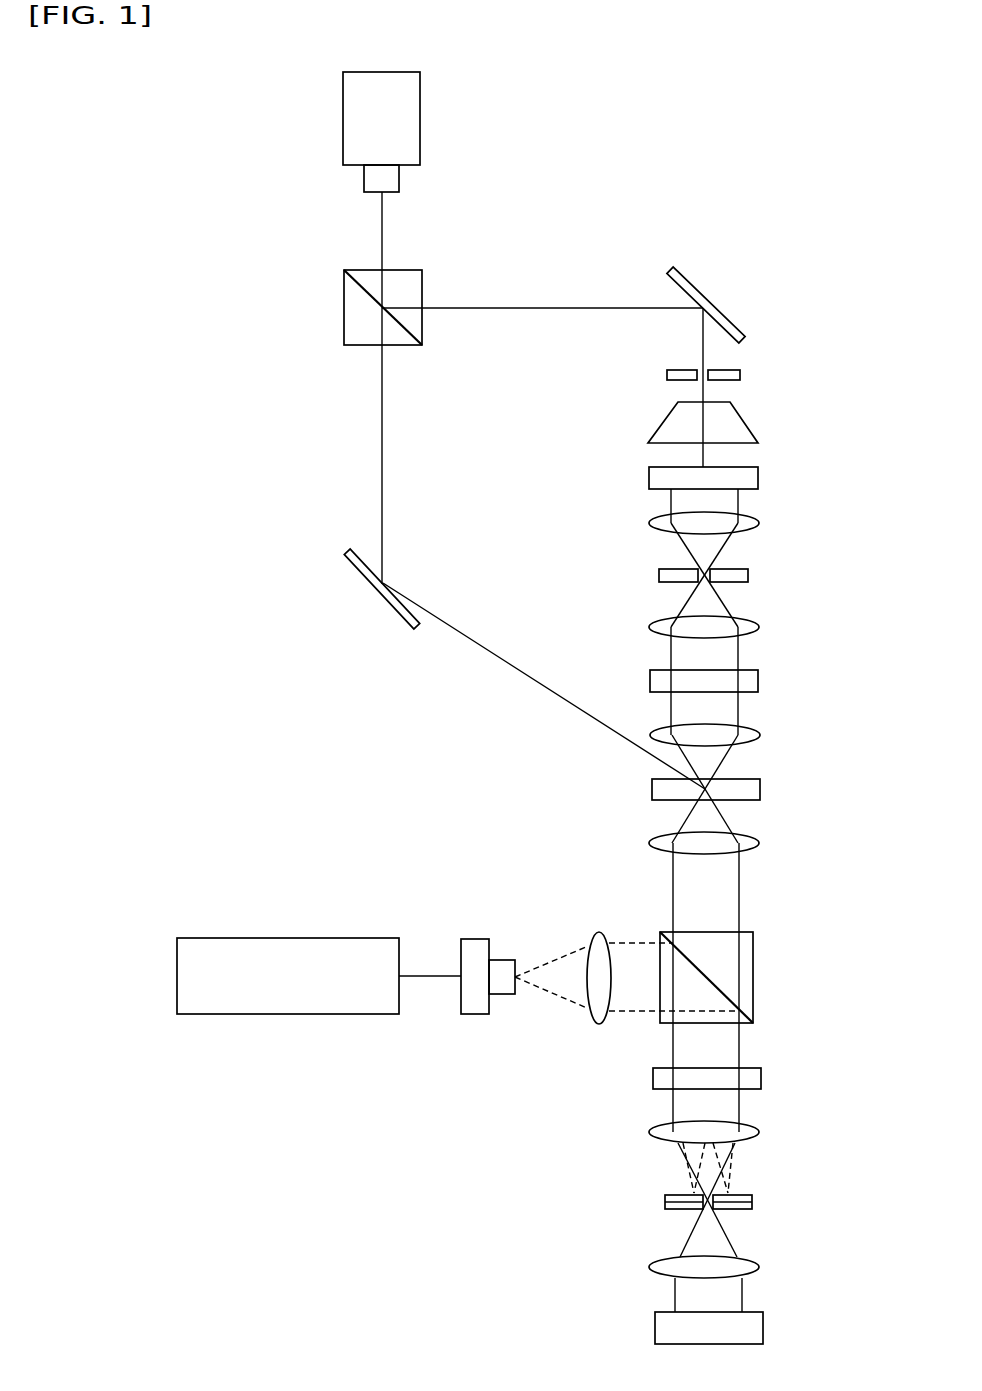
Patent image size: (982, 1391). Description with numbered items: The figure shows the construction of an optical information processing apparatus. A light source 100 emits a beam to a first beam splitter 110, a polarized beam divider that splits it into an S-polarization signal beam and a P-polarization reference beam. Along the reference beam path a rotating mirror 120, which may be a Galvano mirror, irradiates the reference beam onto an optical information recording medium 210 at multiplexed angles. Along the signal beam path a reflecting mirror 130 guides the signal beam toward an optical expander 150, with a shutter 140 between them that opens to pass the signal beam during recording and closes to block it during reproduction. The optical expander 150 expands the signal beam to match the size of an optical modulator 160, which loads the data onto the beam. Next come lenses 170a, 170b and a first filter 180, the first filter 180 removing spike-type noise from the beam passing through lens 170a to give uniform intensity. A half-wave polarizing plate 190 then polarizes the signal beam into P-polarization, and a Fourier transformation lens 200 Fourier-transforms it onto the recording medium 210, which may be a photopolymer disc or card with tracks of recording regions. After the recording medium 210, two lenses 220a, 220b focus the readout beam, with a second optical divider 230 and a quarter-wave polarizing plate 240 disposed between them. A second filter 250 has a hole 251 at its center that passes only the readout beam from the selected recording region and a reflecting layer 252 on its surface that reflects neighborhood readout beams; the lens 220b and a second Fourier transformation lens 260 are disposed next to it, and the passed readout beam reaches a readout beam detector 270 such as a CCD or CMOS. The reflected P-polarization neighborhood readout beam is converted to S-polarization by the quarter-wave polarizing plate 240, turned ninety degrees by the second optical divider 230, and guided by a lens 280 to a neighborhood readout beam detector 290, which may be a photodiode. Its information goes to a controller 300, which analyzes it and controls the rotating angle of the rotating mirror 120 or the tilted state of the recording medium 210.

The light source 100 is at (420, 109).
The first beam splitter 110 is at (422, 287).
The rotating mirror 120 is at (356, 573).
The reflecting mirror 130 is at (723, 312).
The shutter 140 is at (724, 368).
The optical expander 150 is at (747, 420).
The optical modulator 160 is at (758, 477).
The lens 170a is at (759, 522).
The lens 170b is at (759, 625).
The first filter 180 is at (748, 573).
The λ/2 polarizing plate 190 is at (758, 680).
The Fourier transformation lens 200 is at (760, 732).
The optical information recording medium 210 is at (760, 786).
The lens 220a is at (759, 842).
The lens 220b is at (759, 1130).
The second optical divider 230 is at (753, 970).
The λ/4 polarizing plate 240 is at (761, 1076).
The second filter 250 is at (698, 1200).
The hole 251 is at (703, 1209).
The reflecting layer 252 is at (752, 1196).
The second Fourier transformation lens 260 is at (759, 1265).
The readout beam detector 270 is at (763, 1327).
The lens 280 is at (597, 932).
The neighborhood readout beam detector 290 is at (482, 939).
The controller 300 is at (363, 938).